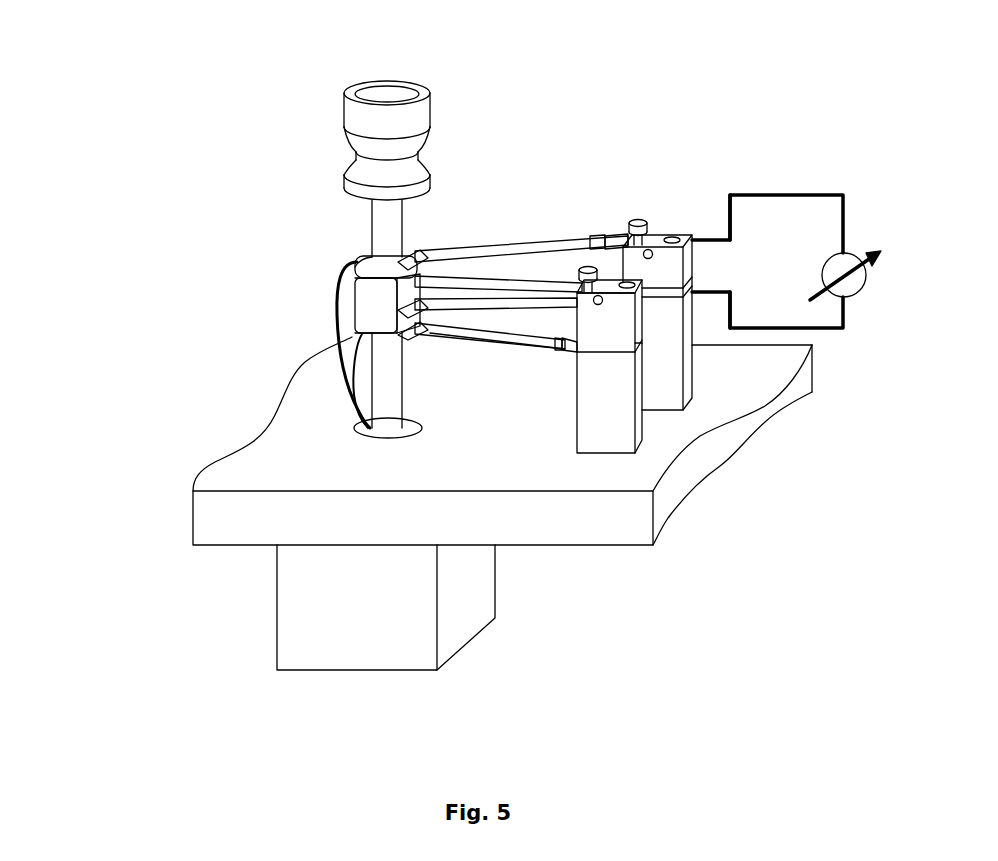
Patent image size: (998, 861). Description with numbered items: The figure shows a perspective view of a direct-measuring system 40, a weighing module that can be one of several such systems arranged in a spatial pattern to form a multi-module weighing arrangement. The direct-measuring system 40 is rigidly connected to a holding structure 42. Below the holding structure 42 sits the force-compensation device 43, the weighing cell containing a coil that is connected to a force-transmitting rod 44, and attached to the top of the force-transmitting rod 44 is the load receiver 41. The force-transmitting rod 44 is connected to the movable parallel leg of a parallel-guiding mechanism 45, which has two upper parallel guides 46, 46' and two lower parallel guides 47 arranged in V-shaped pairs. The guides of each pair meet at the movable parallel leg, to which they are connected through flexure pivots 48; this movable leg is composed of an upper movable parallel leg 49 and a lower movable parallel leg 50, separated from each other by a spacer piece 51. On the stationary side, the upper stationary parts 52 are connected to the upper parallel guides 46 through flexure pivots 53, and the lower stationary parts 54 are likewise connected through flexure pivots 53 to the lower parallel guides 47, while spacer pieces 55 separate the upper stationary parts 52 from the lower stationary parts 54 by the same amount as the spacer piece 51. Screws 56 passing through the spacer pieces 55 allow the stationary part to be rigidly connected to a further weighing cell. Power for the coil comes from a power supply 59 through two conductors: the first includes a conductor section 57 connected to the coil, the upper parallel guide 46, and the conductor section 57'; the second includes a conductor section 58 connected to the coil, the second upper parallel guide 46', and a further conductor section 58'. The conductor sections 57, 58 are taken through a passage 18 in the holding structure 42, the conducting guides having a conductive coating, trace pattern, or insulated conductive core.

The passage 18 is at (229, 443).
The direct-measuring system 40 is at (316, 211).
The load receiver 41 is at (388, 122).
The holding structure 42 is at (575, 441).
The force-compensation device 43 is at (386, 607).
The force-transmitting rod 44 is at (256, 478).
The parallel-guiding mechanism 45 is at (516, 188).
The upper parallel guide 46 is at (502, 185).
The second upper parallel guide 46' is at (529, 150).
The lower parallel guide 47 is at (529, 312).
The flexure pivot 48 is at (408, 273).
The upper movable parallel leg 49 is at (247, 271).
The lower movable parallel leg 50 is at (362, 337).
The spacer piece 51 is at (387, 314).
The upper stationary part 52 is at (767, 173).
The flexure pivot 53 is at (756, 335).
The lower stationary part 54 is at (680, 297).
The spacer piece 55 is at (767, 424).
The screw 56 is at (676, 235).
The conductor section 57 is at (245, 368).
The conductor section 57' is at (843, 185).
The conductor section 58 is at (246, 345).
The conductor section 58' is at (845, 324).
The power supply 59 is at (884, 281).